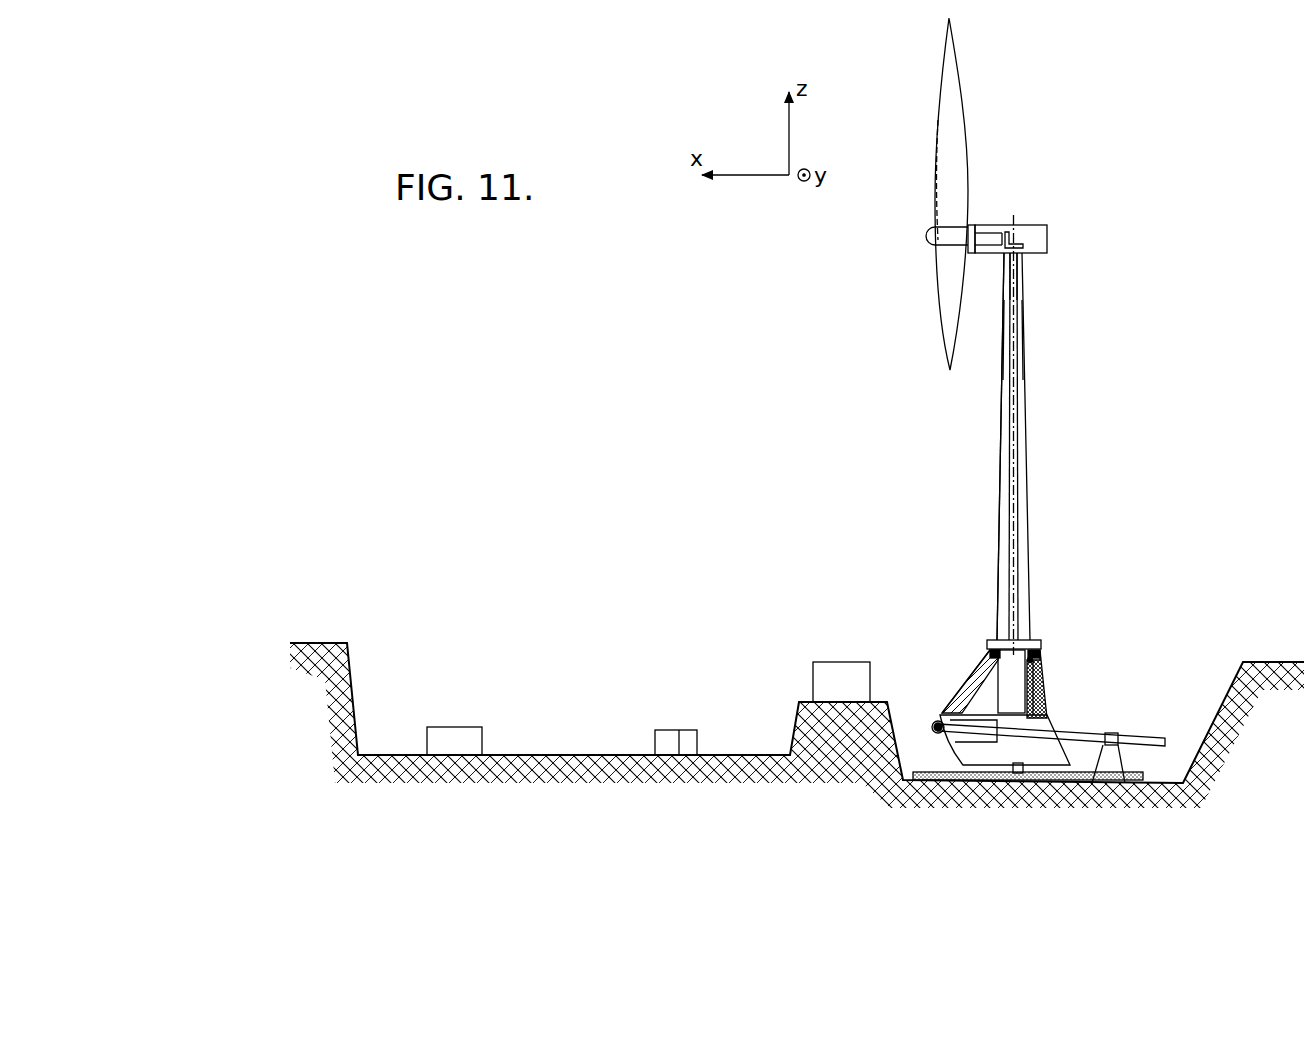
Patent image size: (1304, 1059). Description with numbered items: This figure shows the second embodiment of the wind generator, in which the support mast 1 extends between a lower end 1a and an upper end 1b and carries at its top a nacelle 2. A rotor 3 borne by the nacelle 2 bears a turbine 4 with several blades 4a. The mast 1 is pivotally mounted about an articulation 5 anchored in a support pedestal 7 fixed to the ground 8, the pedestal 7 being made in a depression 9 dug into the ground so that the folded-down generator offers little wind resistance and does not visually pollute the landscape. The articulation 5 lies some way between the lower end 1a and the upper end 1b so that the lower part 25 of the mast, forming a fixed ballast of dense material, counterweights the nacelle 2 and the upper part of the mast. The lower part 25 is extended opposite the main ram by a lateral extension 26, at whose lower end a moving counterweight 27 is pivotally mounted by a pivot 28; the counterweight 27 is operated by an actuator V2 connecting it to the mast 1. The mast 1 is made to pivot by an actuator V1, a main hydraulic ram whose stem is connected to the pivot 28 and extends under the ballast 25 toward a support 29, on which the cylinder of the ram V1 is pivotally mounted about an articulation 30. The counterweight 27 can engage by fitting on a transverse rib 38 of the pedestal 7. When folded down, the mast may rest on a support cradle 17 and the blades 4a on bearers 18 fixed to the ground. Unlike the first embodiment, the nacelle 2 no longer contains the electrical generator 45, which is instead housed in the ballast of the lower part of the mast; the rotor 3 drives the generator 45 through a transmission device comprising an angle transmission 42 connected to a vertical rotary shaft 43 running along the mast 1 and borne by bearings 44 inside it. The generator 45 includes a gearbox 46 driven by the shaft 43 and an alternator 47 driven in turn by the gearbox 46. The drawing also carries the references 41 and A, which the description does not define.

The support mast 1 is at (1030, 440).
The lower end of the mast 1a is at (935, 707).
The upper end of the mast 1b is at (1017, 264).
The nacelle 2 is at (1027, 233).
The rotor 3 is at (950, 237).
The turbine 4 is at (990, 120).
The blades 4a is at (947, 293).
The articulation 5 is at (1040, 666).
The support pedestal 7 is at (1095, 785).
The ground 8 is at (1265, 677).
The depression 9 is at (1187, 700).
The support cradle 17 is at (840, 680).
The bearers 18 is at (470, 735).
The lower part of the mast 25 is at (1040, 655).
The lateral extension 26 is at (947, 708).
The moving counterweight 27 is at (975, 762).
The pivot 28 is at (937, 727).
The support 29 is at (1110, 756).
The articulation 30 is at (1123, 748).
The transverse rib 38 is at (1017, 780).
The outer mast tube 41 is at (1005, 446).
The angle transmission 42 is at (1025, 243).
The vertical rotary shaft 43 is at (1010, 405).
The bearings 44 is at (995, 344).
The electrical generator 45 is at (993, 655).
The gearbox 46 is at (1032, 655).
The alternator 47 is at (1002, 684).
The mast axis A is at (1015, 493).
The actuator V1 is at (1095, 728).
The actuator V2 is at (1042, 694).